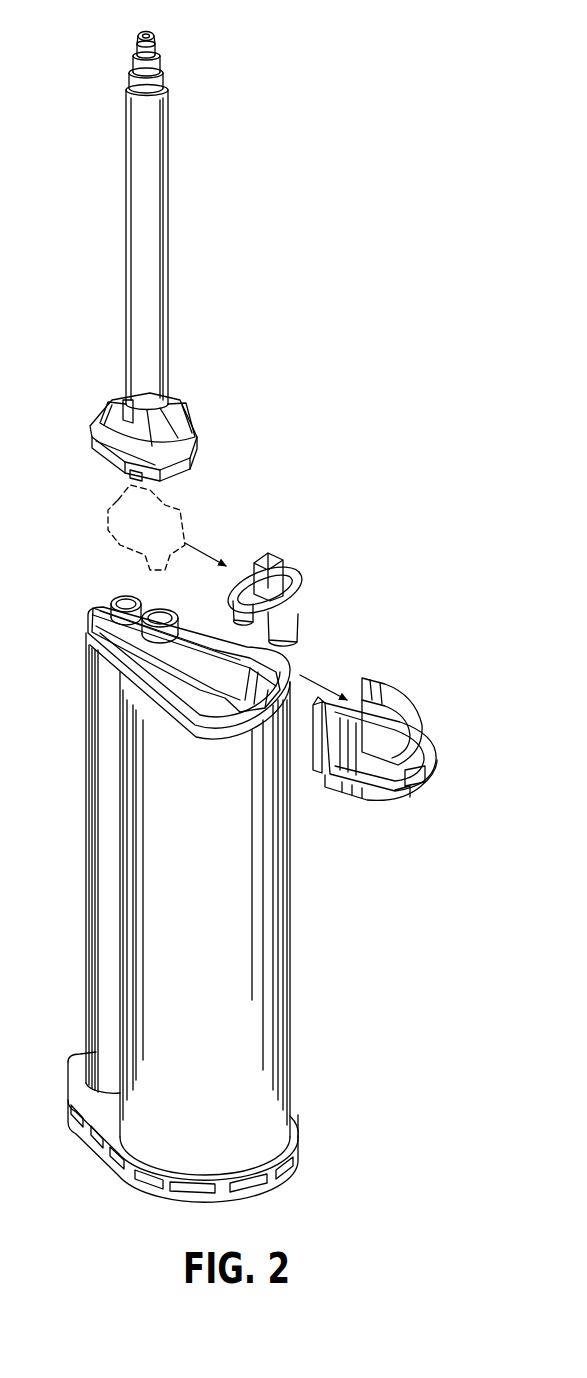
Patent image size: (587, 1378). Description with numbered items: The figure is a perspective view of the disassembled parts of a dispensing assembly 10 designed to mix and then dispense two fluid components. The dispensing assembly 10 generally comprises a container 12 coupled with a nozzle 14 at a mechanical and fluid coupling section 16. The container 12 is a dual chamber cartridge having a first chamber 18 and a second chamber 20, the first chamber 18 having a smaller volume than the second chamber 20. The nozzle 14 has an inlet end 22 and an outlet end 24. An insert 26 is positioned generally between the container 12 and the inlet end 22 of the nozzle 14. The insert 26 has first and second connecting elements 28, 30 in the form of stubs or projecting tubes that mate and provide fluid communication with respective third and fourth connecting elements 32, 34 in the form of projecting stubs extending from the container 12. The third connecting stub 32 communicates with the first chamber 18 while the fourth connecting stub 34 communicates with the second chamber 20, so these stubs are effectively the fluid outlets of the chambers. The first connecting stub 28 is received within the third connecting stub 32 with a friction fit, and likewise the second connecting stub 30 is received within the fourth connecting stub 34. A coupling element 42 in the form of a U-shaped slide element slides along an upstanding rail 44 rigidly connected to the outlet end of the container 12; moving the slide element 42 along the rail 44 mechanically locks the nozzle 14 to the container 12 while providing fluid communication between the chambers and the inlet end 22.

The dispensing assembly 10 is at (316, 376).
The container 12 is at (192, 887).
The nozzle 14 is at (186, 209).
The mechanical and fluid coupling section 16 is at (298, 514).
The first chamber 18 is at (85, 803).
The second chamber 20 is at (292, 964).
The inlet end 22 is at (180, 420).
The outlet end 24 is at (153, 34).
The insert 26 is at (165, 502).
The first connecting element 28 is at (232, 603).
The second connecting element 30 is at (298, 626).
The third connecting element 32 is at (110, 604).
The fourth connecting element 34 is at (117, 628).
The coupling element 42 is at (360, 786).
The upstanding rail 44 is at (182, 668).